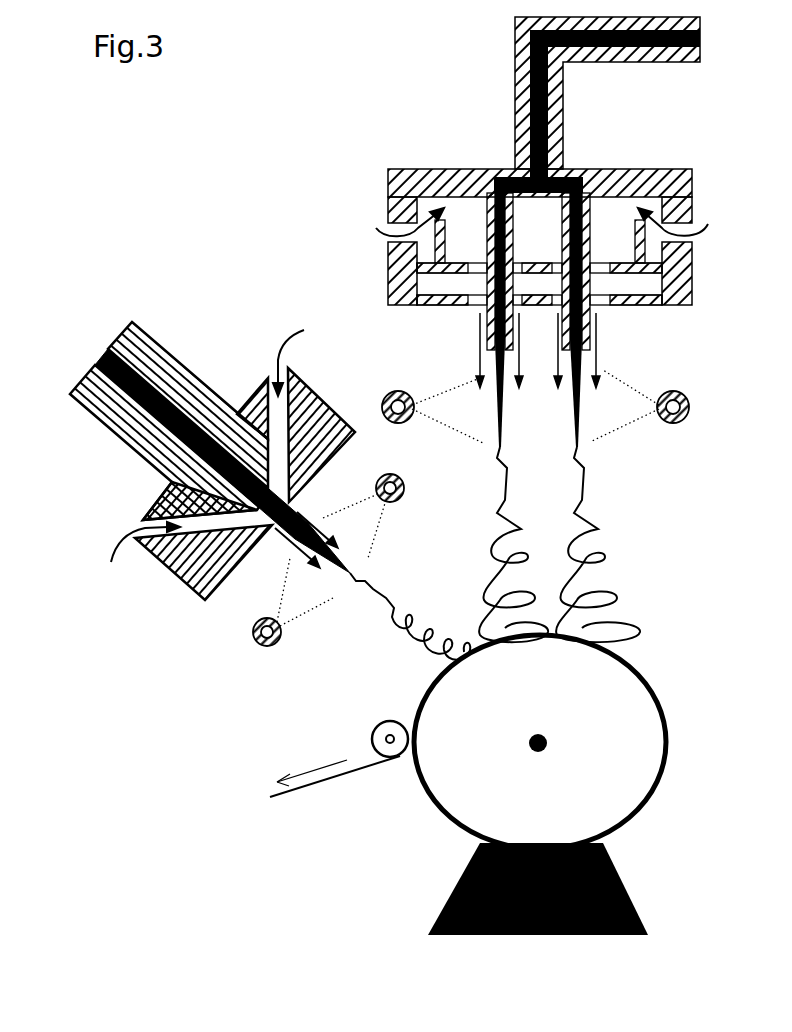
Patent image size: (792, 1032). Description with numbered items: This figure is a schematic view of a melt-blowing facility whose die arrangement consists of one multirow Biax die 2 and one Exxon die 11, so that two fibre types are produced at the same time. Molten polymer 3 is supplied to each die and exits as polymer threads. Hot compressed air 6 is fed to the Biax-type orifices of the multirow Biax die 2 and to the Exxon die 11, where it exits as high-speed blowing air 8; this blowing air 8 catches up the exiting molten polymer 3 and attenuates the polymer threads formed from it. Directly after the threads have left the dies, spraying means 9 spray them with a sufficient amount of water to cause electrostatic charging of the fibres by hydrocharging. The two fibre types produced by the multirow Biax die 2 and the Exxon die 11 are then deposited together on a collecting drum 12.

The multirow Biax die 2 is at (640, 168).
The molten polymer 3 is at (700, 40).
The hot compressed air 6 is at (410, 391).
The high-speed blowing air 8 is at (597, 343).
The spraying means 9 is at (689, 398).
The Exxon die 11 is at (172, 355).
The collecting drum 12 is at (661, 712).